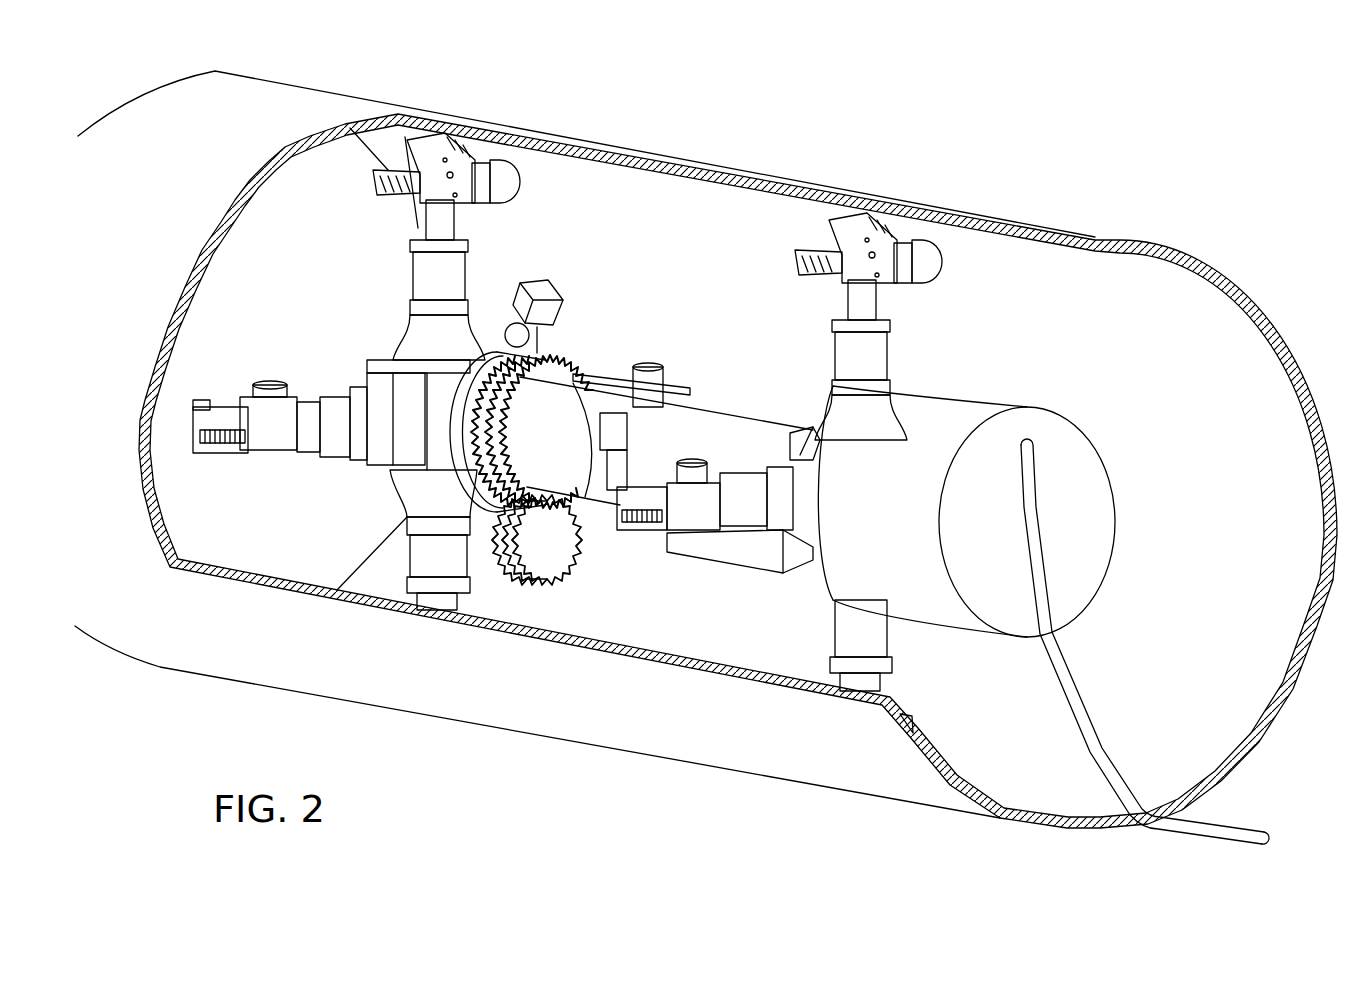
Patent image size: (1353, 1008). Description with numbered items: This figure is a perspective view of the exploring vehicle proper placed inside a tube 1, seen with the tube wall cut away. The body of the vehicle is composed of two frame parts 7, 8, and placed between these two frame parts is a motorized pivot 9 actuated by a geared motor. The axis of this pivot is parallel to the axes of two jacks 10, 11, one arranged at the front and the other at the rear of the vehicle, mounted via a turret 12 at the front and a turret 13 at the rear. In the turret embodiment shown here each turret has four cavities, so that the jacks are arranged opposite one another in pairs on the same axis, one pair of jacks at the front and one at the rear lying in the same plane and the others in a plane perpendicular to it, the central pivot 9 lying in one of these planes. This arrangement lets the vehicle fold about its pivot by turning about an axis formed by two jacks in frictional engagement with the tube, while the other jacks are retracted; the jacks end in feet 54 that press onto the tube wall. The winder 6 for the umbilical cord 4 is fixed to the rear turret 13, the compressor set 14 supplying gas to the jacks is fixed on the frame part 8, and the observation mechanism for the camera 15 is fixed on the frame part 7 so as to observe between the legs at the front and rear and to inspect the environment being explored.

The pipe 1 is at (1167, 253).
The umbilical cord 4 is at (1110, 742).
The winder 6 is at (1041, 440).
The frame part 7 is at (567, 477).
The frame part 8 is at (715, 427).
The motorized pivot 9 is at (647, 358).
The jack 10 is at (407, 281).
The jack 11 is at (900, 363).
The turret 12 is at (367, 370).
The turret 13 is at (797, 440).
The compressor set 14 is at (718, 552).
The camera 15 is at (537, 290).
The clamping foot 54 is at (407, 140).